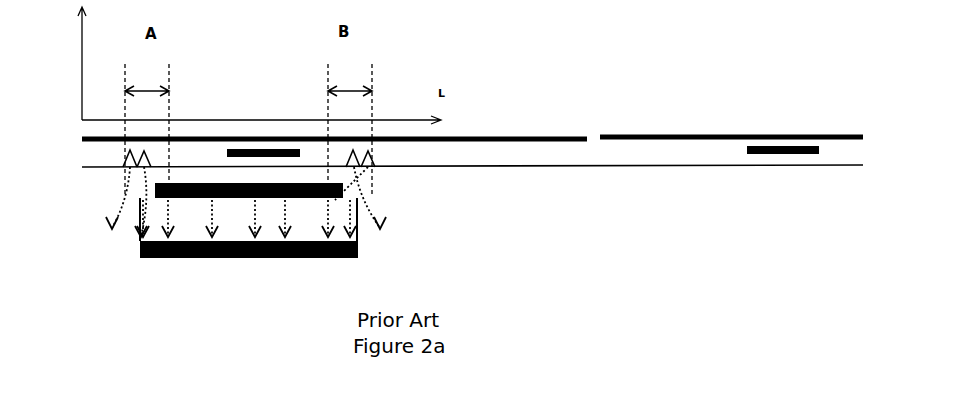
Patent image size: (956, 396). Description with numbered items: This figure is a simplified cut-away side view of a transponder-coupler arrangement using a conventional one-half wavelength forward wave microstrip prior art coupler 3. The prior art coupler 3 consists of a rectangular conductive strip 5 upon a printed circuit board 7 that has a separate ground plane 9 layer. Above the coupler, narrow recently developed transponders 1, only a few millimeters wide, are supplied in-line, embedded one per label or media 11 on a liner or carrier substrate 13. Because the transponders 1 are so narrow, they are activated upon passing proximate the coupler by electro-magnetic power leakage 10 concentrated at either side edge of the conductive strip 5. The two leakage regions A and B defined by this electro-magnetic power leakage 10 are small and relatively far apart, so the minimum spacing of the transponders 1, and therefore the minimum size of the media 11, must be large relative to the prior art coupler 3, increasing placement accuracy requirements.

The transponder 1 is at (243, 131).
The prior art coupler 3 is at (250, 238).
The conductive strip 5 is at (168, 199).
The printed circuit board 7 is at (360, 225).
The ground plane 9 is at (250, 256).
The electro-magnetic power leakage 10 is at (132, 175).
The media 11 is at (518, 134).
The carrier substrate 13 is at (547, 166).